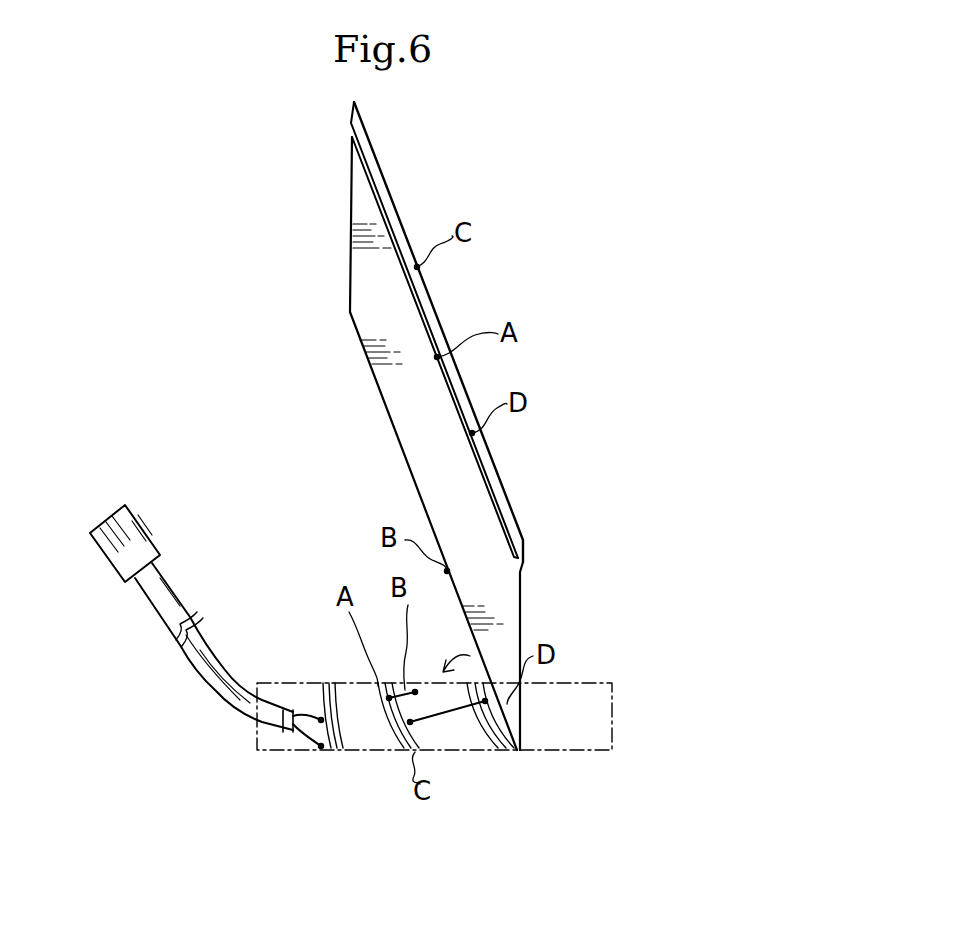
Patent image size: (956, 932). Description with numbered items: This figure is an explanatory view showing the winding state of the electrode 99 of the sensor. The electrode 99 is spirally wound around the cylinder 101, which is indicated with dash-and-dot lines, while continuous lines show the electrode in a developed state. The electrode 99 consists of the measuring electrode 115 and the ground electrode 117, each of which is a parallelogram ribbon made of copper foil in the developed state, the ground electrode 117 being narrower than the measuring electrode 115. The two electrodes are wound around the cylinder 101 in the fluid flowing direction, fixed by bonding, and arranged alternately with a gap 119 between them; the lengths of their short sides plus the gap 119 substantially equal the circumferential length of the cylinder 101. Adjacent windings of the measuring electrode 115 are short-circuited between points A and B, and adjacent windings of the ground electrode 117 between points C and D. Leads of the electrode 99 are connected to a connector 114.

The electrode 99 is at (513, 500).
The cylinder 101 is at (586, 681).
The connector 114 is at (158, 530).
The measuring electrode 115 is at (386, 403).
The ground electrode 117 is at (442, 312).
The gap 119 is at (495, 752).